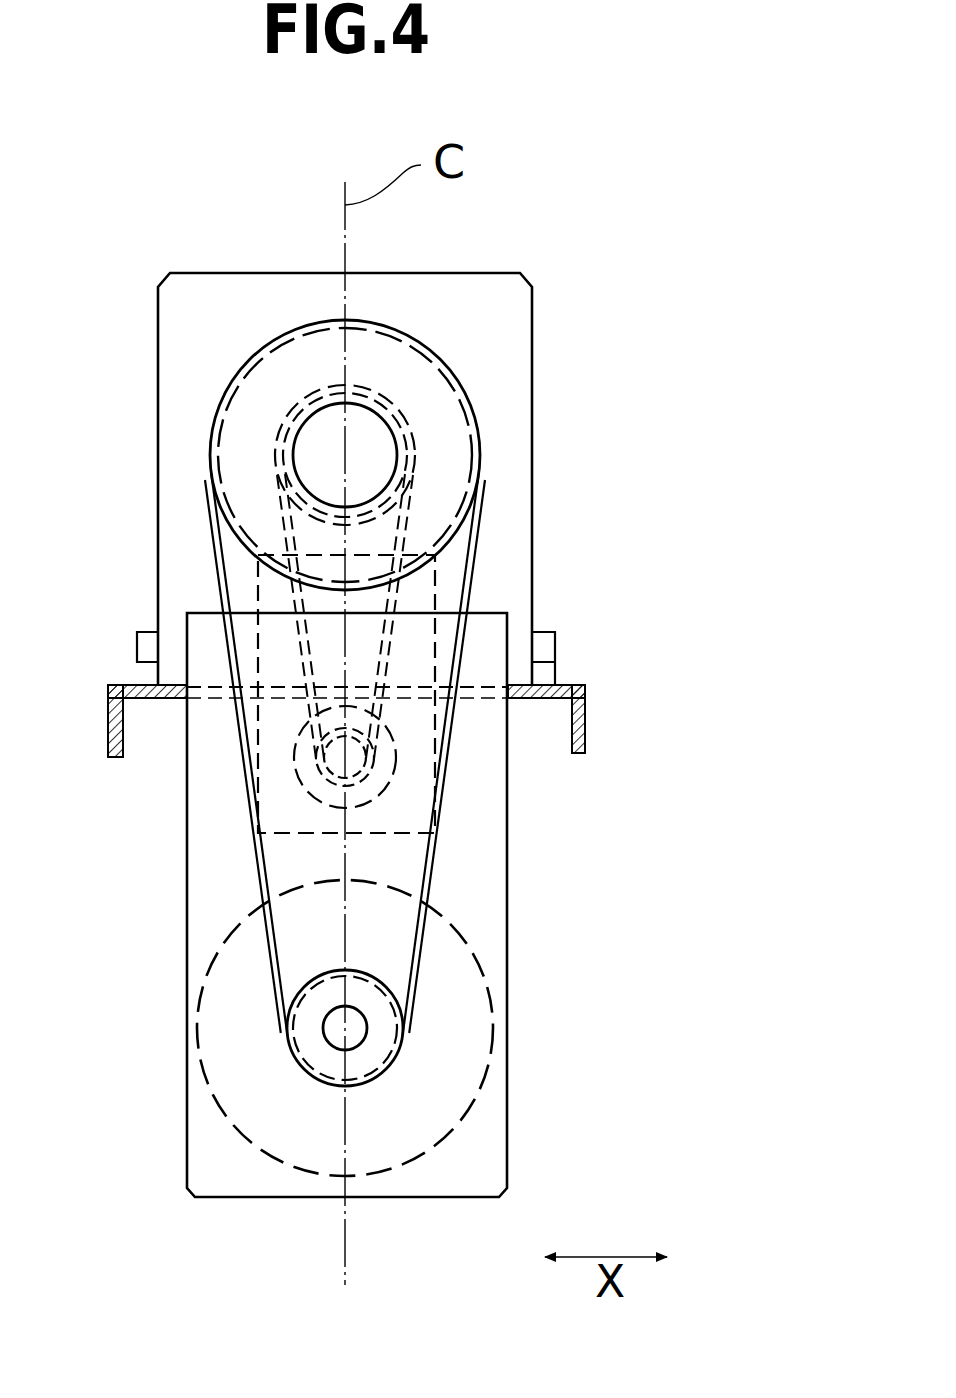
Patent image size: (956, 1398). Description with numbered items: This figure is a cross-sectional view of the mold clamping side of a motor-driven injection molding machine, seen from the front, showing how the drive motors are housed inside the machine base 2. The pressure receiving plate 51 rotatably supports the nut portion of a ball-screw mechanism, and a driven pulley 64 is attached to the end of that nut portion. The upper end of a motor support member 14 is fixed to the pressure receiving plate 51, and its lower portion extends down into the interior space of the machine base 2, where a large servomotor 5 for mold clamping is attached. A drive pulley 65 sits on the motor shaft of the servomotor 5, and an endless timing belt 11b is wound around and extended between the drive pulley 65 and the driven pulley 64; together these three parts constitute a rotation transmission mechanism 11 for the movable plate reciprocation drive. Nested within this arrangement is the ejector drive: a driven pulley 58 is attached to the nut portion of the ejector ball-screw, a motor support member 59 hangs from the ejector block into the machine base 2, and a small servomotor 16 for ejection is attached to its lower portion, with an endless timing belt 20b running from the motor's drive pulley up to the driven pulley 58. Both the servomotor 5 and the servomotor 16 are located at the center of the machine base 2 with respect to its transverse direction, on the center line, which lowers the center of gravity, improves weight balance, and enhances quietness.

The machine base 2 is at (585, 718).
The servomotor for mold clamping 5 is at (478, 957).
The rotation transmission mechanism 11 is at (256, 862).
The endless timing belt 11b is at (427, 868).
The motor support member 14 is at (508, 1130).
The servomotor for ejection 16 is at (300, 787).
The endless timing belt 20b is at (400, 594).
The pressure receiving plate 51 is at (531, 441).
The driven pulley 58 is at (285, 413).
The motor support member 59 is at (400, 835).
The driven pulley 64 is at (455, 377).
The drive pulley 65 is at (407, 1052).